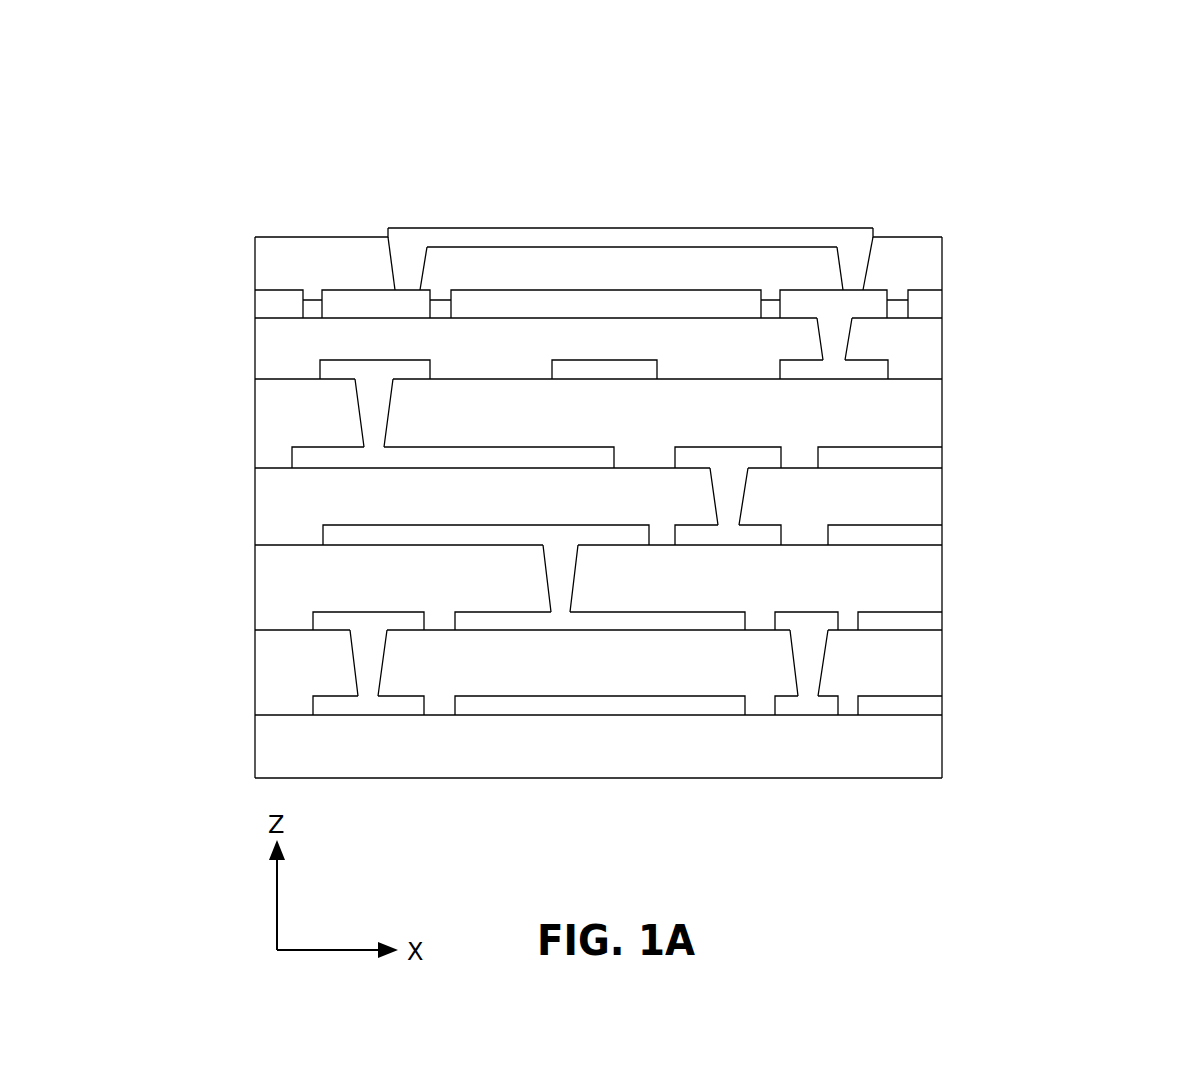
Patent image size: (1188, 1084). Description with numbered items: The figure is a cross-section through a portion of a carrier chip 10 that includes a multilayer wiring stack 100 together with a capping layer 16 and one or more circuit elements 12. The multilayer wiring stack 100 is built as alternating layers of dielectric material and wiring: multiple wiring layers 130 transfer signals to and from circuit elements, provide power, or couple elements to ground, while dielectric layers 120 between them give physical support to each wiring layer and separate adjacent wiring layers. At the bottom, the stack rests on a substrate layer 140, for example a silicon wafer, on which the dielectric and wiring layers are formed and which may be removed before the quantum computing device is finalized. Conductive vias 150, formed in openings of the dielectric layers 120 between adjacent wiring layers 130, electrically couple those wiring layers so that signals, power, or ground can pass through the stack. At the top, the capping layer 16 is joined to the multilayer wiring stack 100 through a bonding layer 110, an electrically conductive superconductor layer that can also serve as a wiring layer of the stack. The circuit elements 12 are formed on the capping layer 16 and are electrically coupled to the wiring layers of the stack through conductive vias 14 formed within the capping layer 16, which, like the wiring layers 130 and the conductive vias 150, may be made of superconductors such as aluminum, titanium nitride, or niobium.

The carrier chip 10 is at (262, 164).
The circuit elements 12 is at (622, 228).
The conductive vias 14 is at (395, 267).
The capping layer 16 is at (932, 250).
The multilayer wiring stack 100 is at (1092, 257).
The bonding layer 110 is at (933, 302).
The dielectric layers 120 is at (925, 340).
The wiring layers 130 is at (888, 370).
The substrate layer 140 is at (937, 760).
The conductive vias 150 is at (375, 402).